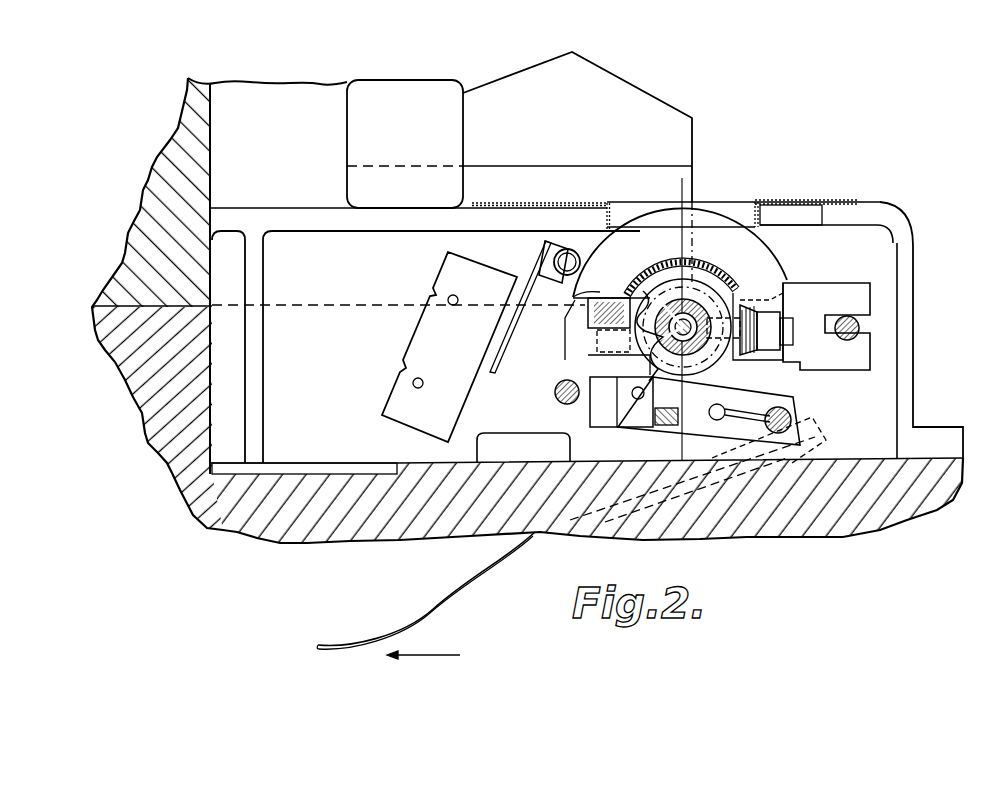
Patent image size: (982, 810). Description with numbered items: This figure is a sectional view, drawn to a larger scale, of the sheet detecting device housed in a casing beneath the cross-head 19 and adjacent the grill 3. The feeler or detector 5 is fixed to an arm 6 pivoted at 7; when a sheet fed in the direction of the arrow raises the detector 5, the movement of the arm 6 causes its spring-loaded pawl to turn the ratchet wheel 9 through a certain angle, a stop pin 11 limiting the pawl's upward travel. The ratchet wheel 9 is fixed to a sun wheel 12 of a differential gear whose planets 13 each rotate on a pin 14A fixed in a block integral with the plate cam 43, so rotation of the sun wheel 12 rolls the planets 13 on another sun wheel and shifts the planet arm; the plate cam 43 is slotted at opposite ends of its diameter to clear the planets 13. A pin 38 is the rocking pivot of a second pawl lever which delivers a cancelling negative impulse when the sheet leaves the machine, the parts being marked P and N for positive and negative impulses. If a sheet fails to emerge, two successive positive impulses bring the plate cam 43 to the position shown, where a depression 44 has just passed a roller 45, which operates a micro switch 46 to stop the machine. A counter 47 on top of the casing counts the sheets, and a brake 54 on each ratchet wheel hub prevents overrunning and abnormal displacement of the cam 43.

The counter 47 is at (440, 94).
The cross-head 19 is at (595, 79).
The roller 45 is at (568, 249).
The depression 44 is at (591, 241).
The plate cam 43 is at (705, 231).
The grill 3 is at (676, 183).
The ratchet wheel 9 is at (681, 269).
The sun wheel 12 is at (704, 277).
The planets 13 is at (607, 300).
The brake 54 is at (870, 300).
The pin 14A is at (580, 305).
The stop pin 11 is at (596, 340).
The micro switch 46 is at (428, 342).
The pin 38 is at (555, 393).
The arm 6 is at (582, 420).
The pivot 7 is at (790, 410).
The feeler or detector 5 is at (457, 582).
The negative impulse marking N is at (553, 373).
The positive impulse marking P is at (724, 292).